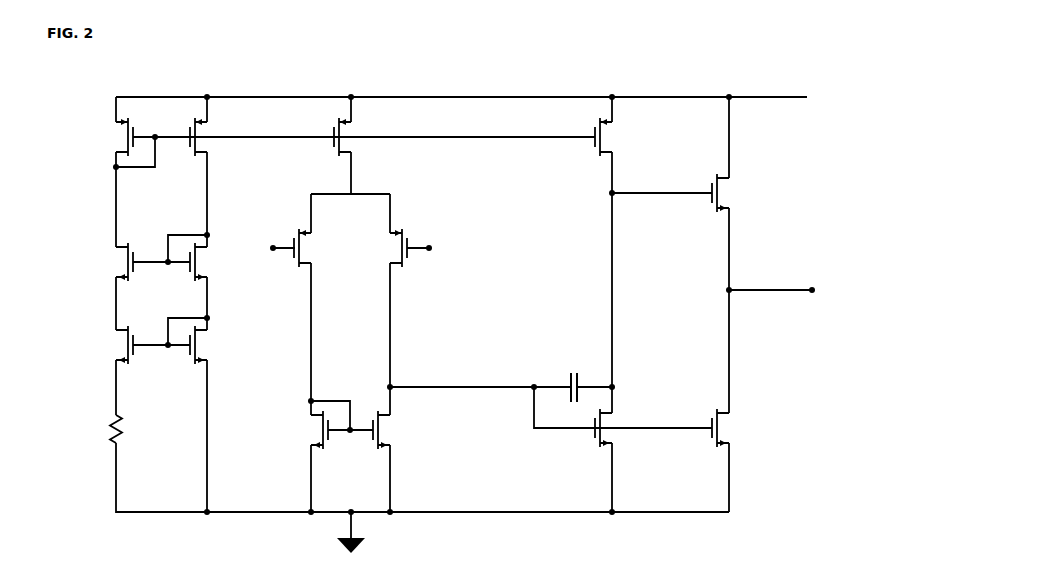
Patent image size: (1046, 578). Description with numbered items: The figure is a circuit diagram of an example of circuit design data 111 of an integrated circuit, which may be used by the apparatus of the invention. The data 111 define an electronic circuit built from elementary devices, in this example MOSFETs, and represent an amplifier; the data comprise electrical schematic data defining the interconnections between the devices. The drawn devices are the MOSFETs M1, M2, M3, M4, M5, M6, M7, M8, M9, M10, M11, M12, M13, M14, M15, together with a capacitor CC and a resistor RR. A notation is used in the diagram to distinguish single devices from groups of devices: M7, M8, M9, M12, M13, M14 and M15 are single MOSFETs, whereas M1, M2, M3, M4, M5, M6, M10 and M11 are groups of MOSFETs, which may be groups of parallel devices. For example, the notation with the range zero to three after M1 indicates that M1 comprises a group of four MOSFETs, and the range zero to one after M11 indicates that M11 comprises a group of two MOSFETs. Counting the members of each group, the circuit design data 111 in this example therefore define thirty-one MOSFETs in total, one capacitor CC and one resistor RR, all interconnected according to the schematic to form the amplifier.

The circuit design data 111 is at (417, 69).
The MOSFET M1 is at (269, 237).
The MOSFET M2 is at (435, 237).
The MOSFET M3 is at (286, 430).
The MOSFET M4 is at (421, 430).
The MOSFET M5 is at (384, 137).
The MOSFET M6 is at (647, 137).
The MOSFET M7 is at (587, 434).
The MOSFET M8 is at (736, 193).
The MOSFET M9 is at (736, 428).
The MOSFET M10 is at (81, 137).
The MOSFET M11 is at (242, 137).
The MOSFET M12 is at (218, 263).
The MOSFET M13 is at (218, 346).
The MOSFET M14 is at (105, 263).
The MOSFET M15 is at (105, 346).
The resistor RR is at (98, 430).
The capacitor CC is at (559, 376).